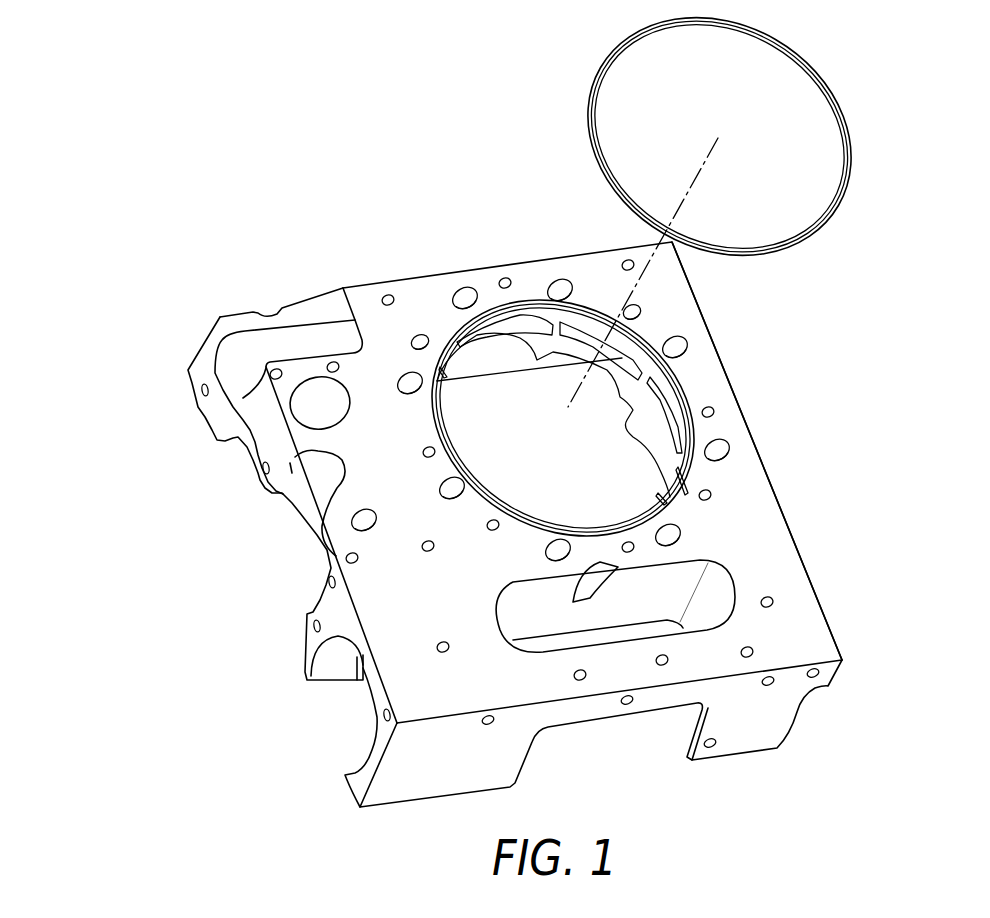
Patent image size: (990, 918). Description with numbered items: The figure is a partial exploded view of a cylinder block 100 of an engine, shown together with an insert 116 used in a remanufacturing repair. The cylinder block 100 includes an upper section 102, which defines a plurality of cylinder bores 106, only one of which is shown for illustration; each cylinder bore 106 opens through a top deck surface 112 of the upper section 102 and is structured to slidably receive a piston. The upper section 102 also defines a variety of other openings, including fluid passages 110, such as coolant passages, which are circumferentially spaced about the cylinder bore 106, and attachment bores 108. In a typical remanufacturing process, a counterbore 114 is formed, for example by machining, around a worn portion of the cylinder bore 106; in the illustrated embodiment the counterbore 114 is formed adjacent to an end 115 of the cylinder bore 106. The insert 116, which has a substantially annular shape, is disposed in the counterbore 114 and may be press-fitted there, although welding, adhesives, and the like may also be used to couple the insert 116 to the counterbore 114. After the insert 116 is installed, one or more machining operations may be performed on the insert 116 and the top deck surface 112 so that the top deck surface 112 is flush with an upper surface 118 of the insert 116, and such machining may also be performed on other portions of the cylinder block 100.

The cylinder block 100 is at (199, 244).
The upper section 102 is at (785, 700).
The cylinder bore 106 is at (571, 374).
The attachment bores 108 is at (462, 286).
The fluid passages 110 is at (418, 333).
The top deck surface 112 is at (787, 525).
The counterbore 114 is at (673, 374).
The end of the cylinder bore 115 is at (654, 334).
The insert 116 is at (862, 121).
The upper surface of the insert 118 is at (827, 87).